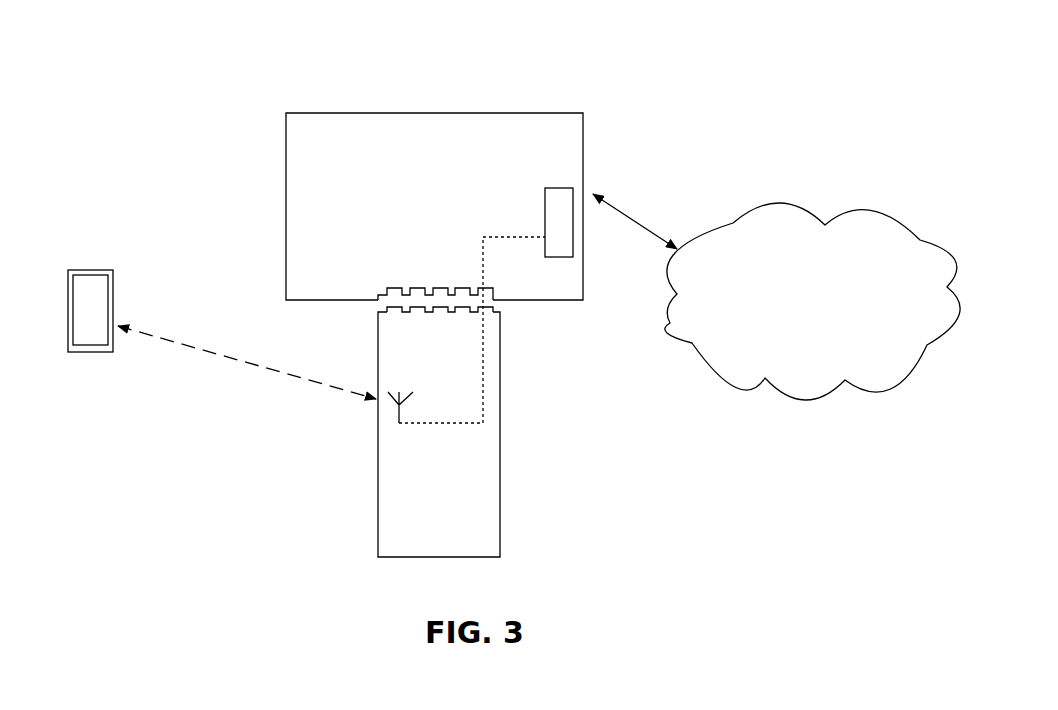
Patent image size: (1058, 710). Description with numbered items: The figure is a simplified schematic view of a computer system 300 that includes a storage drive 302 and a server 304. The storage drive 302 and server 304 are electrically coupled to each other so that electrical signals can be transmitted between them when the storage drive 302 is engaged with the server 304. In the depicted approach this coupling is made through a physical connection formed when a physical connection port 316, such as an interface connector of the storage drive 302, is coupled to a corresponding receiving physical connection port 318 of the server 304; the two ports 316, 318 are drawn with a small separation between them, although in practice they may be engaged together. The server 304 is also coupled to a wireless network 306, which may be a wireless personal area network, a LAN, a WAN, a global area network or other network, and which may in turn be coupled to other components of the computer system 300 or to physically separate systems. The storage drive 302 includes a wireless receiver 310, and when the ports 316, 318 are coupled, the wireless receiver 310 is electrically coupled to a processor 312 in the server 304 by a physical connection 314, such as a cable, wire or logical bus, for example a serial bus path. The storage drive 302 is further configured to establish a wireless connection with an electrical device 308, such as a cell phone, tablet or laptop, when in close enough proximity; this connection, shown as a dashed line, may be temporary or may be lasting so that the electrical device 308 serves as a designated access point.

The computer system 300 is at (162, 86).
The storage drive 302 is at (500, 522).
The server 304 is at (286, 191).
The wireless network 306 is at (669, 332).
The electrical device 308 is at (86, 270).
The wireless receiver 310 is at (399, 421).
The processor 312 is at (573, 245).
The physical connection 314 is at (483, 266).
The physical connection port 316 is at (412, 324).
The receiving physical connection port 318 is at (412, 276).